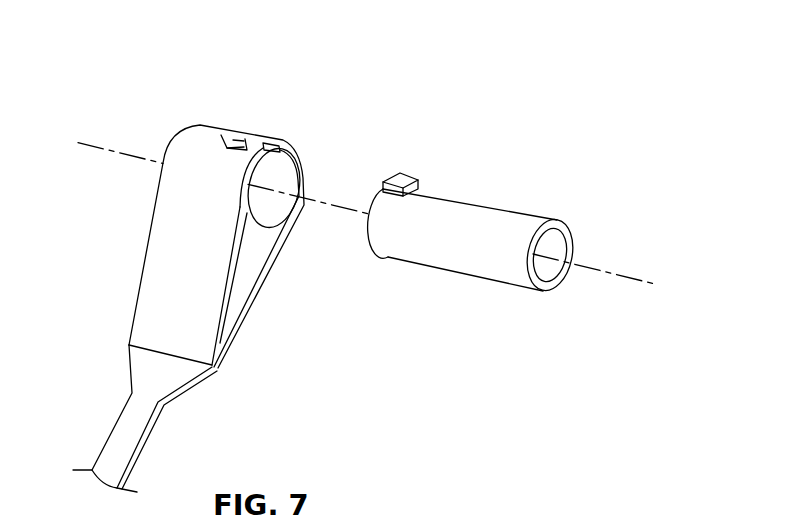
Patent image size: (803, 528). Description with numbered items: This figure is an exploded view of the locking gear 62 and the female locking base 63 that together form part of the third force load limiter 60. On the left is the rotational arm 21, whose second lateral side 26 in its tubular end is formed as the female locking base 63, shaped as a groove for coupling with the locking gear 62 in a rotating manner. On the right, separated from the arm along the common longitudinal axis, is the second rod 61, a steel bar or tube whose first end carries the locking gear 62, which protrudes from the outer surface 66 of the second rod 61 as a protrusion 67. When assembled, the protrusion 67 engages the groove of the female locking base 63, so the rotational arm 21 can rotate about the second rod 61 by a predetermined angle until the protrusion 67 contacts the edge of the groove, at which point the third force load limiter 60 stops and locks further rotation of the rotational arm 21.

The rotational arm 21 is at (133, 422).
The second lateral side 26 is at (270, 210).
The third force load limiter 60 is at (567, 95).
The second rod 61 is at (532, 225).
The locking gear 62 is at (385, 262).
The female locking base 63 is at (282, 120).
The outer surface 66 is at (383, 210).
The protrusion 67 is at (401, 173).